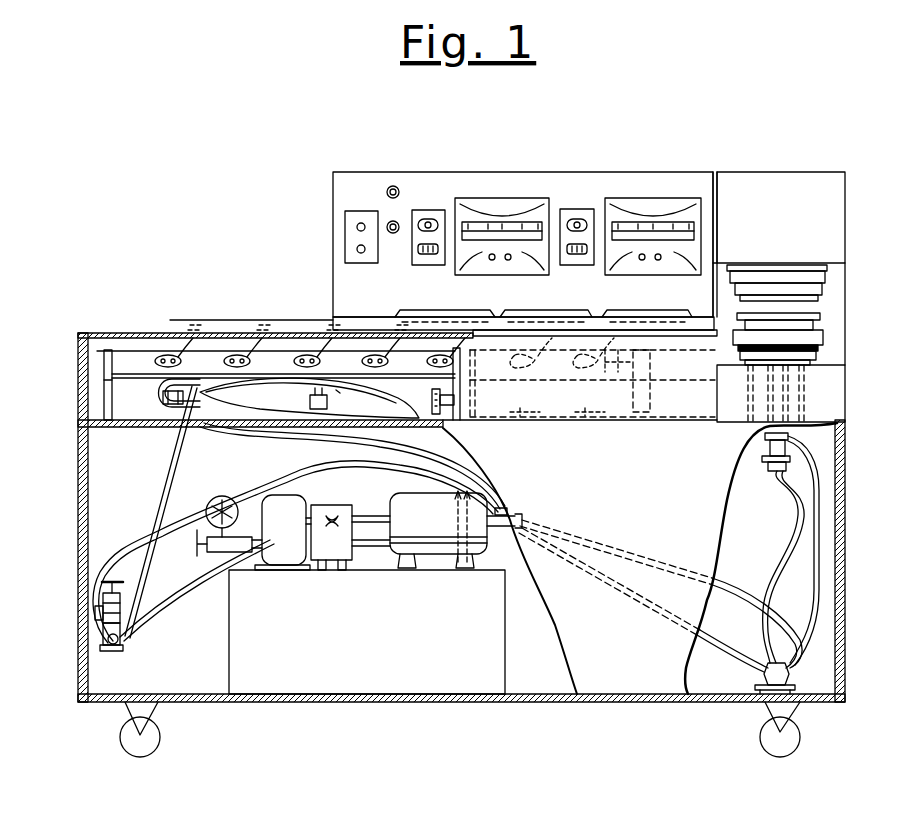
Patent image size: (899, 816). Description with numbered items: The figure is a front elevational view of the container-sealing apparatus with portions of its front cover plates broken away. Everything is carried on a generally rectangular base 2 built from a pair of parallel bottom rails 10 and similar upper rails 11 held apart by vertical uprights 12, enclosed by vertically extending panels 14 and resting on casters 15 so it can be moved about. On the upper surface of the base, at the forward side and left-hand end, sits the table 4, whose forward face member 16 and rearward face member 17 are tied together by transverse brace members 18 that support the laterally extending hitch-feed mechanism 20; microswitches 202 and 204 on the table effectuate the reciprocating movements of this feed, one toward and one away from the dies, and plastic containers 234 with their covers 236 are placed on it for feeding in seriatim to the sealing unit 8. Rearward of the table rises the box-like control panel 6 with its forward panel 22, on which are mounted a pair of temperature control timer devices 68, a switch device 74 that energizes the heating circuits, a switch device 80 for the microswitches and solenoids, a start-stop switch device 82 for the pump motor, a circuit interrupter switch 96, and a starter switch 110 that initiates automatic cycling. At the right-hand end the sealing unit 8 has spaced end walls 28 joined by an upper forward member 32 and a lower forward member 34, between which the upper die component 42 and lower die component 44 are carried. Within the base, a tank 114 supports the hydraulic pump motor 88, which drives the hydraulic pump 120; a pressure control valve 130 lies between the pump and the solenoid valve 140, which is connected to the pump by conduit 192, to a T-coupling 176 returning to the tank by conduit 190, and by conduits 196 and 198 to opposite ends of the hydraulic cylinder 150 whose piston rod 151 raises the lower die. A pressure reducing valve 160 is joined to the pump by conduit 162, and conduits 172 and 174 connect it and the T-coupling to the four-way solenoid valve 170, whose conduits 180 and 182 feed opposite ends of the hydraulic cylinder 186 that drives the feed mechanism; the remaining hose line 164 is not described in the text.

The base 2 is at (40, 563).
The table 4 is at (40, 389).
The control panel 6 is at (281, 172).
The sealing unit 8 is at (861, 324).
The bottom rails 10 is at (425, 703).
The upper rails 11 is at (115, 430).
The vertical uprights 12 is at (78, 466).
The vertically extending panels 14 is at (363, 561).
The casters 15 is at (160, 736).
The forward face member 16 is at (592, 383).
The rearward face member 17 is at (83, 338).
The brace members 18 is at (112, 405).
The hitch-feed mechanism 20 is at (130, 320).
The forward vertically-extending panel 22 is at (502, 249).
The end walls 28 is at (713, 290).
The upper forward member 32 is at (781, 217).
The lower forward member 34 is at (781, 342).
The upper die component 42 is at (827, 280).
The lower die component 44 is at (825, 335).
The temperature control timer devices 68 is at (675, 214).
The switch device 74 is at (577, 258).
The switch device 80 is at (430, 210).
The switch device 82 is at (345, 232).
The hydraulic pump motor 88 is at (412, 497).
The circuit interrupter switch 96 is at (393, 186).
The starter switch 110 is at (393, 233).
The tank 114 is at (367, 632).
The hydraulic pump 120 is at (292, 500).
The pressure control valve 130 is at (335, 505).
The solenoid valve 140 is at (790, 672).
The hydraulic cylinder 150 is at (768, 466).
The piston rod 151 is at (785, 387).
The pressure reducing valve 160 is at (124, 648).
The conduit 162 is at (169, 595).
The hose 164 is at (146, 512).
The 4-way solenoid valve 170 is at (198, 378).
The conduit 172 is at (181, 462).
The conduit 174 is at (243, 441).
The T-coupling 176 is at (515, 518).
The conduit 180 is at (282, 412).
The conduit 182 is at (340, 398).
The hydraulic cylinder 186 is at (412, 404).
The conduit 190 is at (600, 573).
The conduit 192 is at (619, 545).
The conduit 196 is at (799, 514).
The conduit 198 is at (812, 572).
The microswitch 202 is at (503, 410).
The microswitch 204 is at (600, 410).
The plastic containers 234 is at (420, 317).
The covers 236 is at (470, 312).